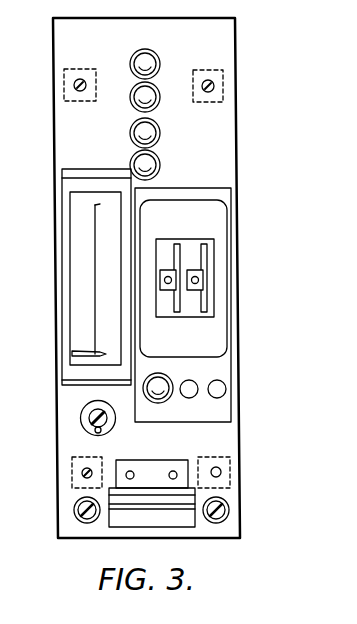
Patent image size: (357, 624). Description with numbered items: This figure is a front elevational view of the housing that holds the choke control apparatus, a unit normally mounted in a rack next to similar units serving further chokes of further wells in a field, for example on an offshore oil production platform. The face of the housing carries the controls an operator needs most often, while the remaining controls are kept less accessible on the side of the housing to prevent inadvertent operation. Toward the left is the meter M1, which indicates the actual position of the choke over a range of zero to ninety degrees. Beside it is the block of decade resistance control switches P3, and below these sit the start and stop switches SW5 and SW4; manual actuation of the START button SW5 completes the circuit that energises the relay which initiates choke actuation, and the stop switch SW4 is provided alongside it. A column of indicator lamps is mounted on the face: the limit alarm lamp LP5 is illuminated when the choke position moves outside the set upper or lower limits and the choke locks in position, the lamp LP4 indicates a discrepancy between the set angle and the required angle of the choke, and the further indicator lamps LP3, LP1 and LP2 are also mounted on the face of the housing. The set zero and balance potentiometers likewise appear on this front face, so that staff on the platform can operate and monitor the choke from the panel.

The limit alarm lamp LP5 is at (157, 53).
The indicator lamp LP3 is at (131, 106).
The indicator lamp LP1 is at (158, 133).
The lamp LP4 is at (160, 165).
The indicator lamp LP2 is at (163, 402).
The meter M1 is at (68, 318).
The decade resistance control switches P3 is at (226, 296).
The START button SW5 is at (194, 381).
The stop switch SW4 is at (227, 389).